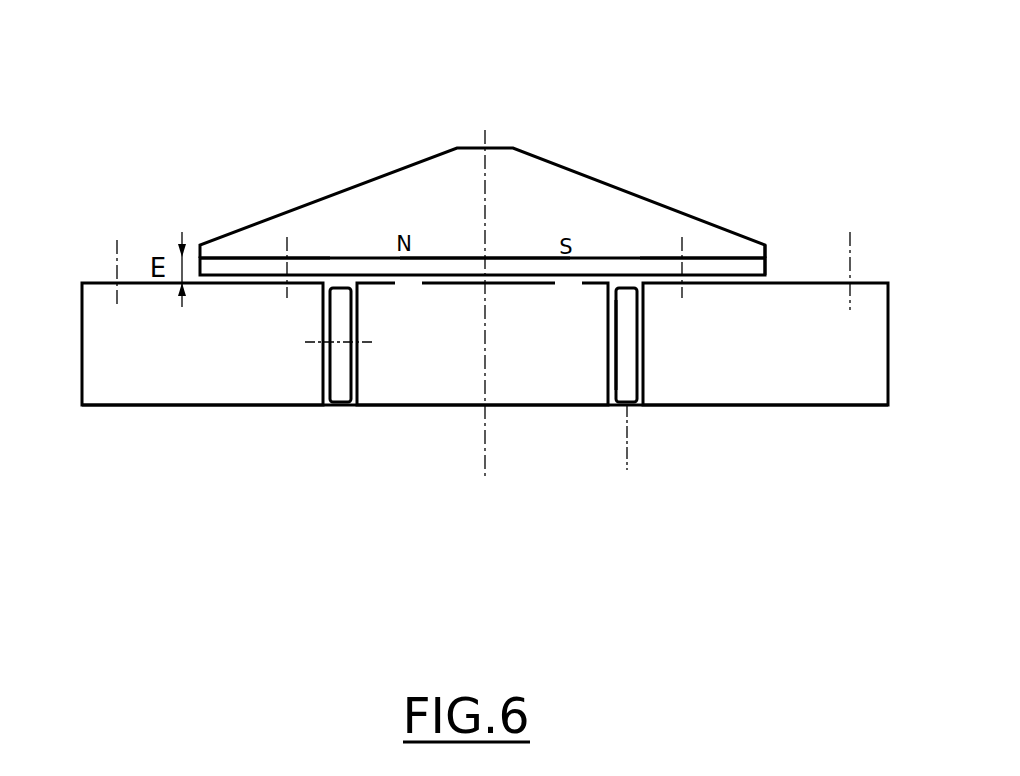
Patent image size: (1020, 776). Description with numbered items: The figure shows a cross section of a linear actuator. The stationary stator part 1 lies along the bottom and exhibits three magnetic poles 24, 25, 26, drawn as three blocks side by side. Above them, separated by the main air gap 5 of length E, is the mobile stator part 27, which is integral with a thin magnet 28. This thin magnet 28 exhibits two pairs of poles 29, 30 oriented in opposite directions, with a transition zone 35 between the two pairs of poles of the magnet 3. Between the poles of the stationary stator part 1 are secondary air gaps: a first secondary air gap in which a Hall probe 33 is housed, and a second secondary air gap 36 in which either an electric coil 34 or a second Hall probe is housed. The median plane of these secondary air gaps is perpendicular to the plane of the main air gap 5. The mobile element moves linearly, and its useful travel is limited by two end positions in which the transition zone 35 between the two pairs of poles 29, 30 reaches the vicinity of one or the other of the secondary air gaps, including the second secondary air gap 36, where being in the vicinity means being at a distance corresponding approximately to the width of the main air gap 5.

The stationary stator part 1 is at (513, 497).
The magnet 3 is at (790, 264).
The main air gap 5 is at (120, 263).
The first magnetic pole 24 is at (178, 375).
The second magnetic pole 25 is at (440, 383).
The third magnetic pole 26 is at (803, 372).
The mobile stator part 27 is at (593, 203).
The thin magnet 28 is at (473, 240).
The first pair of poles 29 is at (332, 267).
The second pair of poles 30 is at (715, 267).
The Hall probe 33 is at (340, 370).
The electric coil 34 is at (632, 375).
The transition zone 35 is at (519, 268).
The second secondary air gap 36 is at (620, 410).